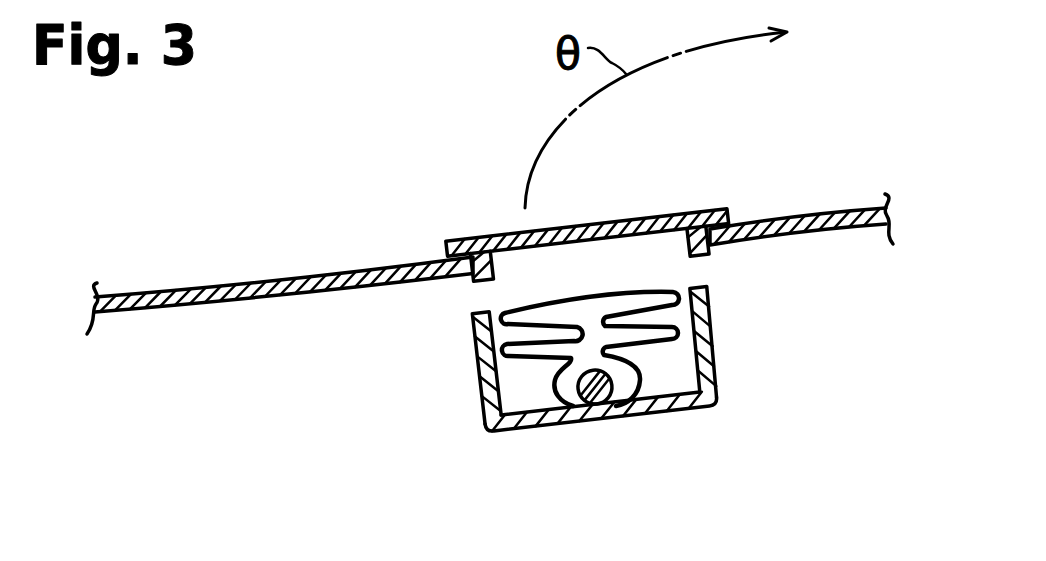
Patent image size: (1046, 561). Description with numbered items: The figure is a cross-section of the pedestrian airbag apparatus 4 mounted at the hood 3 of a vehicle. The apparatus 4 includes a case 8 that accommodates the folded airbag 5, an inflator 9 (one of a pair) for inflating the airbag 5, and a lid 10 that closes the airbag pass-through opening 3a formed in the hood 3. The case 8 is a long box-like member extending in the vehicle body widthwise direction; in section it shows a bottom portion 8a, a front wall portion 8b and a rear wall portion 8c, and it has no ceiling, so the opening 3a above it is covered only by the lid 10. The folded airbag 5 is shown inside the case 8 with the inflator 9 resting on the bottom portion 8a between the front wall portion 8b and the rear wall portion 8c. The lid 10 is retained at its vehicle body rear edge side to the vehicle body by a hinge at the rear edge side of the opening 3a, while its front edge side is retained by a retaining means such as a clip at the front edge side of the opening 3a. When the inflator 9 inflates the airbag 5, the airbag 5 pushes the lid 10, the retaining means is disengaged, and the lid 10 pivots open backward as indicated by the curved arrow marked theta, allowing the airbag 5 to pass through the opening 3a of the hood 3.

The hood 3 is at (490, 249).
The airbag pass-through opening 3a is at (737, 251).
The pedestrian airbag apparatus 4 is at (565, 335).
The airbag 5 is at (503, 344).
The case 8 is at (612, 416).
The bottom portion 8a is at (670, 417).
The front wall portion 8b is at (478, 384).
The rear wall portion 8c is at (717, 368).
The inflator 9 is at (569, 414).
The lid 10 is at (628, 222).